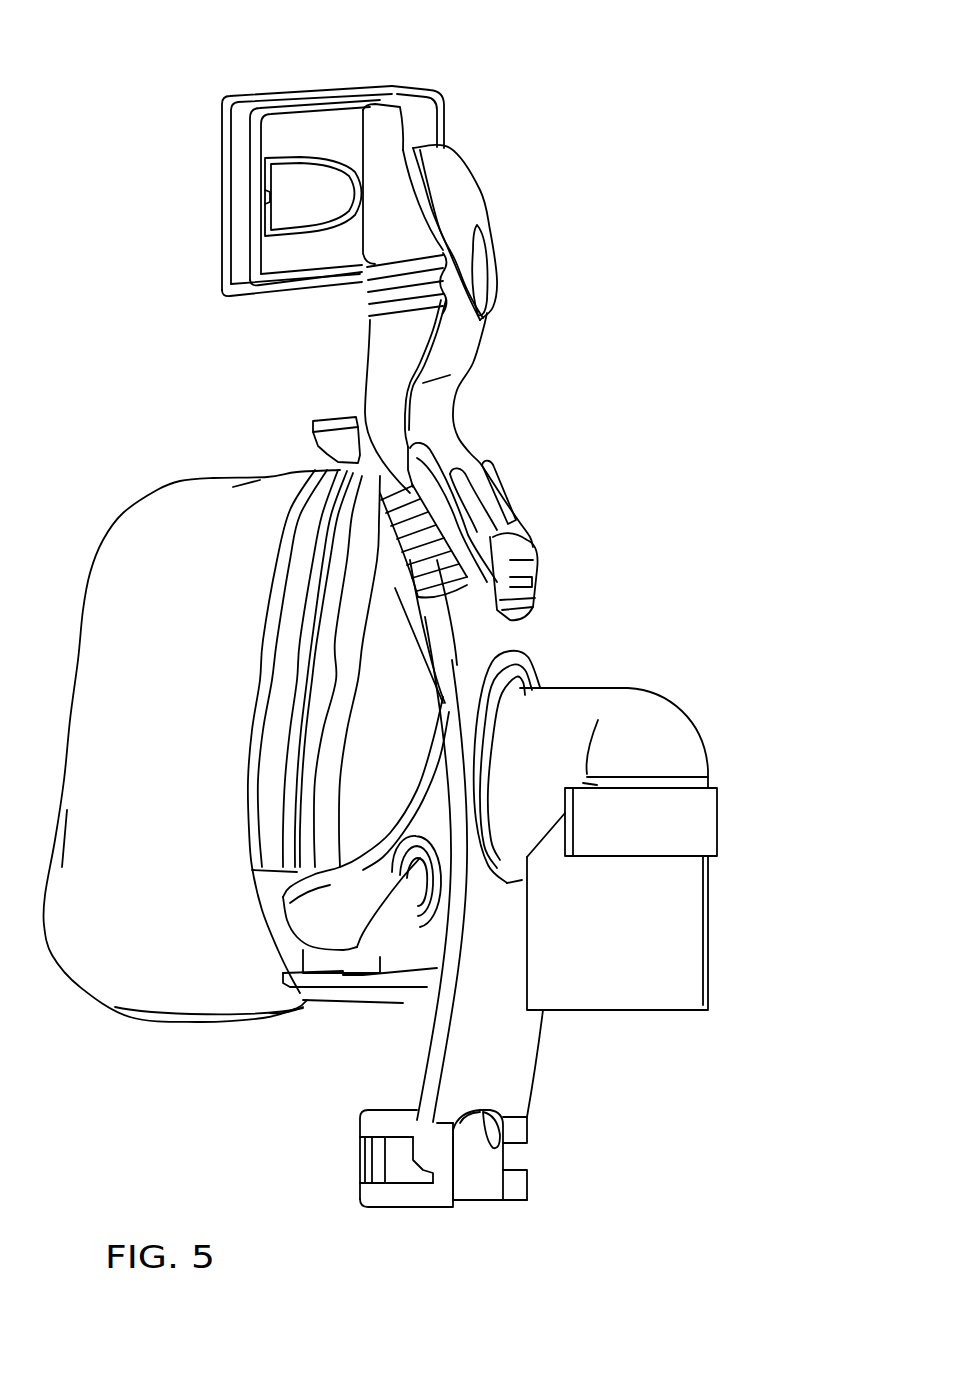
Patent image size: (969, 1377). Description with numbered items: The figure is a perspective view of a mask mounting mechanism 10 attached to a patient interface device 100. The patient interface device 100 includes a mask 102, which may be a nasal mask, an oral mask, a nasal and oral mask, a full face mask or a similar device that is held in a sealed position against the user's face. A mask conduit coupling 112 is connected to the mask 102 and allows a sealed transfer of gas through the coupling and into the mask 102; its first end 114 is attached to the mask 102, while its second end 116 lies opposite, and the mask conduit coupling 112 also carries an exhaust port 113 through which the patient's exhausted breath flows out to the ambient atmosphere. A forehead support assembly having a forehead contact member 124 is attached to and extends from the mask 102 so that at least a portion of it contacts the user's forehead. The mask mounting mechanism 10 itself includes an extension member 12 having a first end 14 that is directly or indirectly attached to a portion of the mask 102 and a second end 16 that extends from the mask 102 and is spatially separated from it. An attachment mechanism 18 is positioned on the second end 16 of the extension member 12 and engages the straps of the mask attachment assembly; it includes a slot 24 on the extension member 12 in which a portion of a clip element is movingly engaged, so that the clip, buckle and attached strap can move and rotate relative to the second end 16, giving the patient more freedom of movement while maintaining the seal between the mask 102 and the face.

The mask mounting mechanism 10 is at (594, 1077).
The extension member 12 is at (470, 1032).
The first end 14 is at (492, 643).
The second end 16 is at (441, 1169).
The attachment mechanism 18 is at (473, 1214).
The slot 24 is at (403, 1163).
The patient interface device 100 is at (646, 422).
The mask 102 is at (124, 958).
The mask conduit coupling 112 is at (699, 695).
The exhaust port 113 is at (717, 817).
The first end 114 is at (555, 665).
The second end 116 is at (729, 987).
The forehead contact member 124 is at (316, 84).